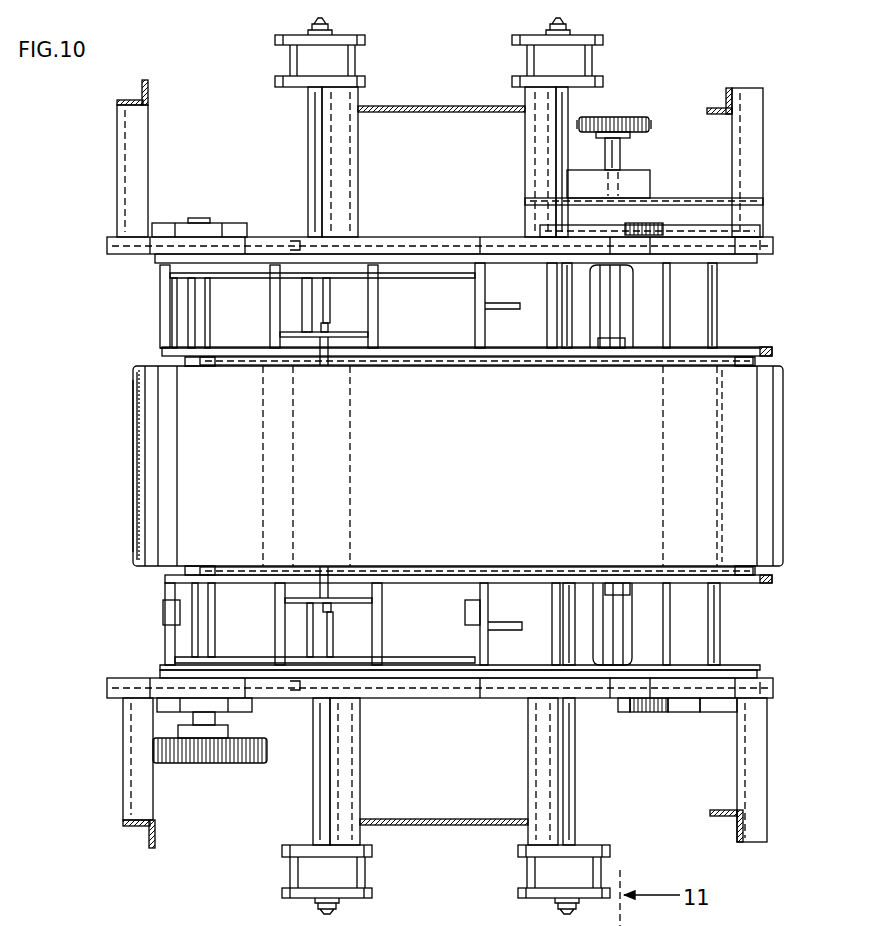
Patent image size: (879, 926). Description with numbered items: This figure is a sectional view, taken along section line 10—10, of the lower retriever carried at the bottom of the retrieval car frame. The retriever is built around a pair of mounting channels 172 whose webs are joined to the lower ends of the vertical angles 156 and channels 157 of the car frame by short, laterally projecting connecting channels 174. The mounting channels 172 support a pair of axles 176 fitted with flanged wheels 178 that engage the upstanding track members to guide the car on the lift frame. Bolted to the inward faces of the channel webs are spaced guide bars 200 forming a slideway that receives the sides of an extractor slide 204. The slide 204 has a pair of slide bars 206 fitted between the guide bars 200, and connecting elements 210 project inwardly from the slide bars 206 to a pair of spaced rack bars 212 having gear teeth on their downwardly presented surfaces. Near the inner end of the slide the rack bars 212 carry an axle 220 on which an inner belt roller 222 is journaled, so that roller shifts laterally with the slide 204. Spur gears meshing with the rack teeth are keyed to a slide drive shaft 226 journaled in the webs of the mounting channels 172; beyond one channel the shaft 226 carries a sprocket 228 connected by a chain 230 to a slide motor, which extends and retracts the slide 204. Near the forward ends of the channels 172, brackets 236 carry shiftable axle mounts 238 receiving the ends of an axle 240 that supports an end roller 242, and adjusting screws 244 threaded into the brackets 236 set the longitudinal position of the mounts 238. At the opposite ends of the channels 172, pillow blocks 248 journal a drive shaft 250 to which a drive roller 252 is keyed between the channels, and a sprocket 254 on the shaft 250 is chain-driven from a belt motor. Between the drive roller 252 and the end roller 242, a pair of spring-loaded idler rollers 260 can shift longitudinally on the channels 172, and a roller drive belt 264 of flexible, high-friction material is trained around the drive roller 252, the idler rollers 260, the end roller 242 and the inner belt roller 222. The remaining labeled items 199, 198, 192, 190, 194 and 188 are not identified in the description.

The mounting channels 172 is at (432, 237).
The guide bars 200 is at (748, 264).
The rack bars 212 is at (733, 347).
The extractor slide 204 is at (774, 345).
The connecting channels 174 is at (128, 170).
The axles 176 is at (308, 133).
The flanged wheels 178 is at (277, 65).
The vertical angles 156 is at (140, 92).
The channels 157 is at (455, 112).
The sprocket 228 is at (634, 117).
The slide drive shaft 226 is at (622, 156).
The adjusting screws 244 is at (655, 223).
The brackets 236 is at (630, 712).
The axle mounts 238 is at (681, 712).
The axle 240 is at (712, 712).
The pillow blocks 248 is at (240, 222).
The sprocket 254 is at (215, 763).
The connecting elements 210 is at (160, 301).
The drive shaft 250 is at (205, 311).
The spring-loaded idler rollers 260 is at (300, 300).
The axle 220 is at (331, 612).
The slide bars 206 is at (443, 276).
The end roller 242 is at (720, 629).
The roller drive belt 264 is at (548, 522).
The drive roller 252 is at (140, 368).
The inner belt roller 222 is at (337, 492).
The chain 230 is at (650, 912).
The housing 199 is at (780, 925).
The section line 10 is at (815, 925).
The member 198 is at (115, 919).
The member 192 is at (183, 925).
The member 190 is at (315, 921).
The member 194 is at (375, 921).
The member 188 is at (450, 920).